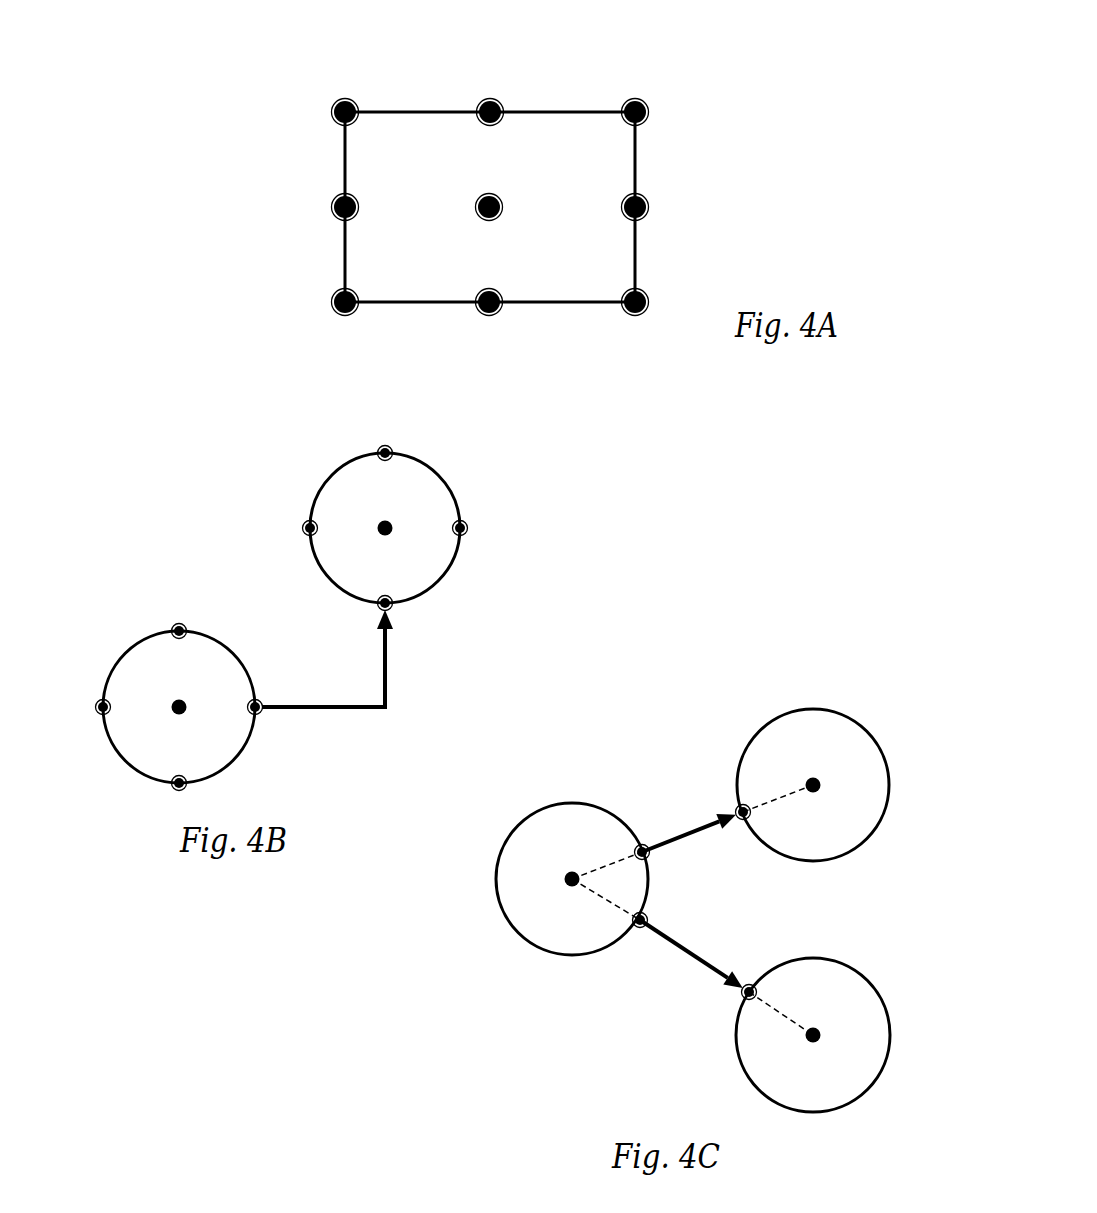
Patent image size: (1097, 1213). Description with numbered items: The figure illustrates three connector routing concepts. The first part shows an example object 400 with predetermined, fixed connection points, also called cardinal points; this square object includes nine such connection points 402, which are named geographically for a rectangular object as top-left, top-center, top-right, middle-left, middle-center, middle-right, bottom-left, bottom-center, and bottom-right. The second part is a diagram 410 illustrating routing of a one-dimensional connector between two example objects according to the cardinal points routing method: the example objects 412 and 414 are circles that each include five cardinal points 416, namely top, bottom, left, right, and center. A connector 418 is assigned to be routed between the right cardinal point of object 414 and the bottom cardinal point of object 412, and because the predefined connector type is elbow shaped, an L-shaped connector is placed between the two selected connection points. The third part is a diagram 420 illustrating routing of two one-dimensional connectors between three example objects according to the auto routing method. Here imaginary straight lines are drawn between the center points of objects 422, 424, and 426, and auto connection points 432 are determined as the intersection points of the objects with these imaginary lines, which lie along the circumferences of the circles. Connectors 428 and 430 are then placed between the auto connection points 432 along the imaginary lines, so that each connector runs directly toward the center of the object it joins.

In FIG. 4A, the example object 400 is at (703, 78).
In FIG. 4A, the connection points 402 is at (332, 295).
In FIG. 4B, the diagram 410 is at (182, 437).
In FIG. 4B, the example object 412 is at (458, 488).
In FIG. 4B, the example object 414 is at (148, 636).
In FIG. 4B, the cardinal points 416 is at (183, 623).
In FIG. 4B, the connector 418 is at (386, 665).
In FIG. 4C, the diagram 420 is at (803, 645).
In FIG. 4C, the object 422 is at (781, 715).
In FIG. 4C, the object 424 is at (534, 813).
In FIG. 4C, the object 426 is at (852, 970).
In FIG. 4C, the connector 428 is at (703, 825).
In FIG. 4C, the connector 430 is at (706, 948).
In FIG. 4C, the auto connection points 432 is at (740, 822).